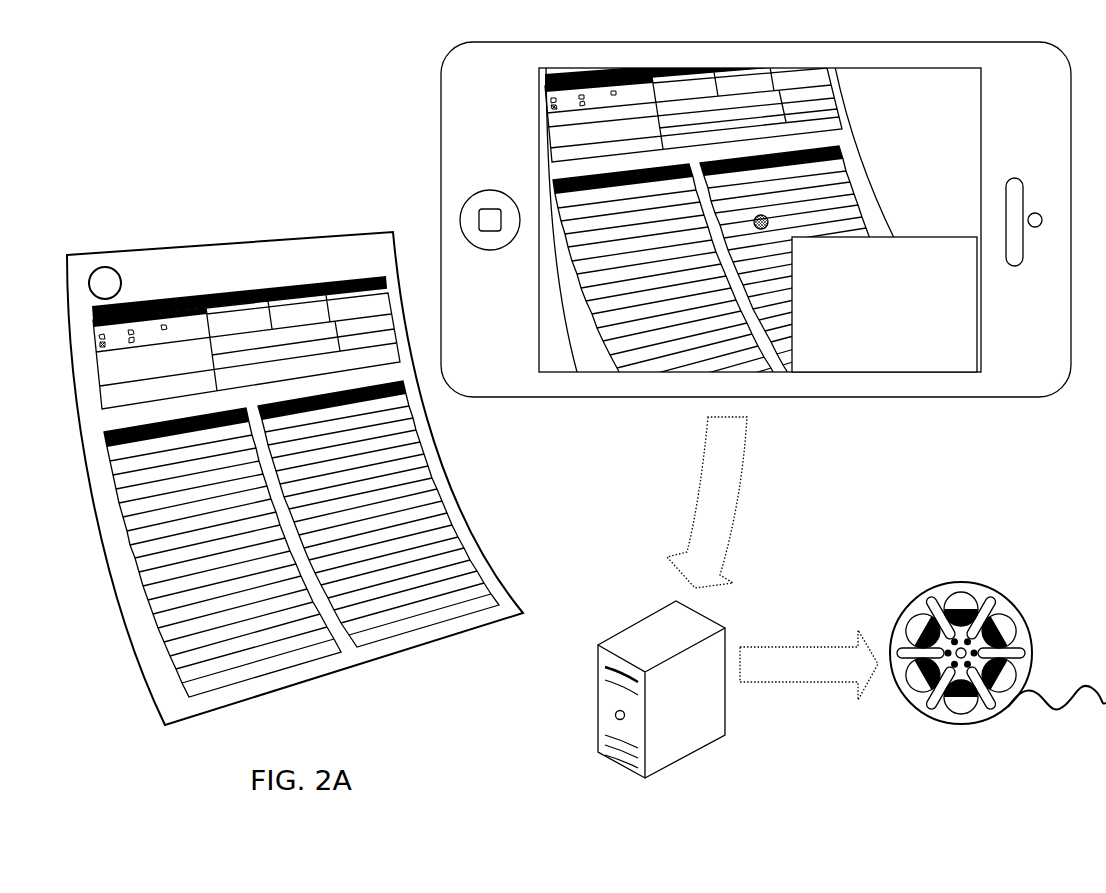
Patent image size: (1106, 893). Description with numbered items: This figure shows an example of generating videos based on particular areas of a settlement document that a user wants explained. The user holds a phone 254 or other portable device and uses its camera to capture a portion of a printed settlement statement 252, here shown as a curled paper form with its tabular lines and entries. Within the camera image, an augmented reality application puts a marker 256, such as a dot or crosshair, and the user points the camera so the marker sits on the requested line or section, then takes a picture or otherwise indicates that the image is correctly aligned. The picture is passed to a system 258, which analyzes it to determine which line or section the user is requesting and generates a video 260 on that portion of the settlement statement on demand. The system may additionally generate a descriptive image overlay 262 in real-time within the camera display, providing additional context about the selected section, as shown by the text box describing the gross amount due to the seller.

The printed settlement statement 252 is at (173, 245).
The phone 254 is at (772, 42).
The marker 256 is at (768, 219).
The system 258 is at (725, 628).
The video 260 is at (1003, 598).
The descriptive image overlay 262 is at (975, 328).